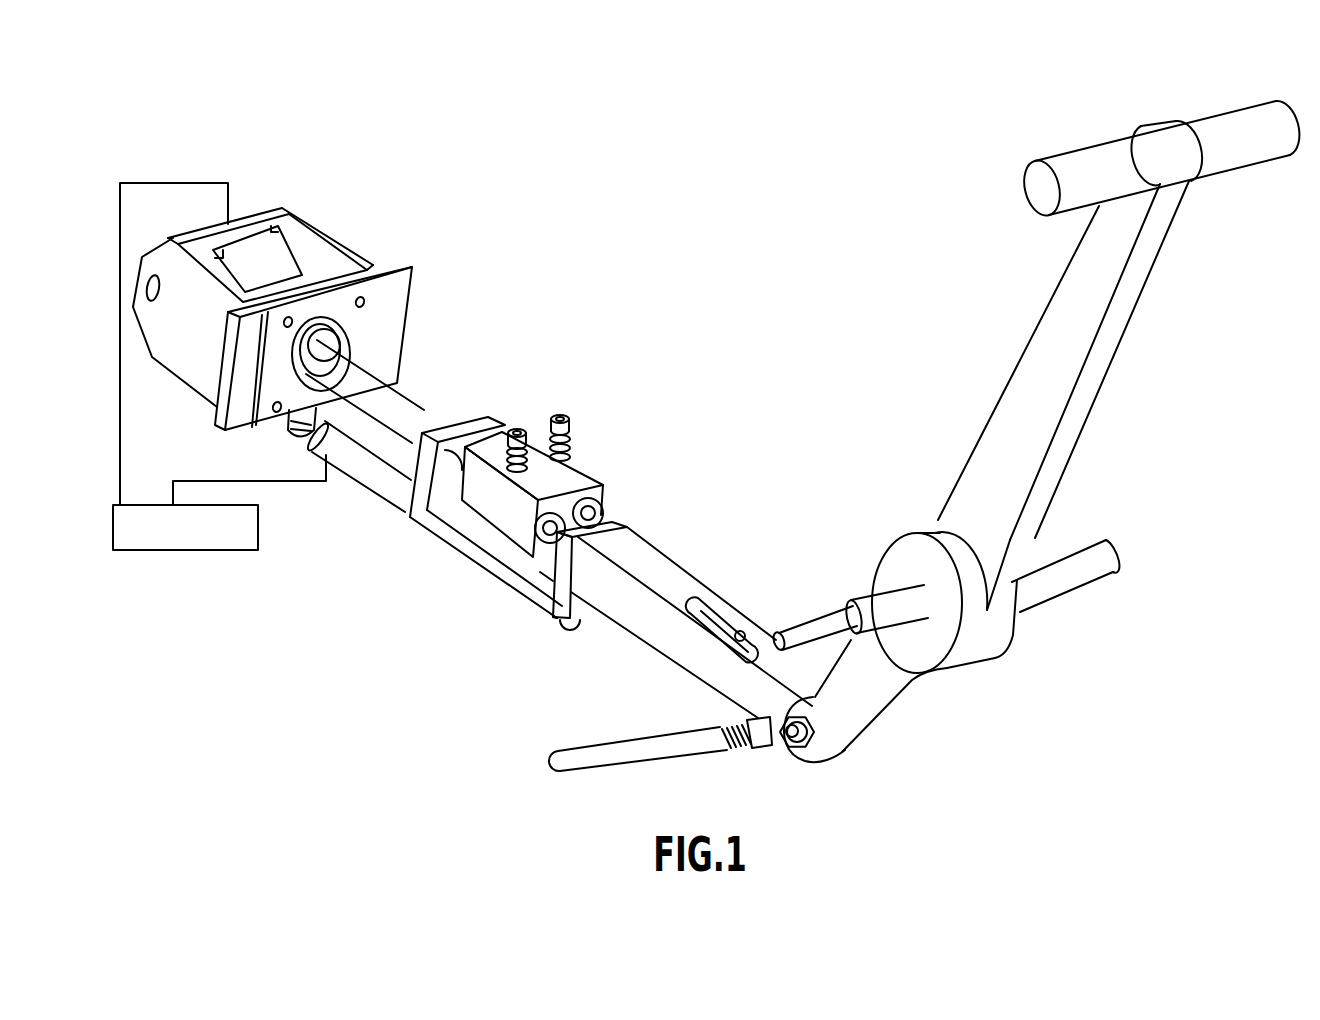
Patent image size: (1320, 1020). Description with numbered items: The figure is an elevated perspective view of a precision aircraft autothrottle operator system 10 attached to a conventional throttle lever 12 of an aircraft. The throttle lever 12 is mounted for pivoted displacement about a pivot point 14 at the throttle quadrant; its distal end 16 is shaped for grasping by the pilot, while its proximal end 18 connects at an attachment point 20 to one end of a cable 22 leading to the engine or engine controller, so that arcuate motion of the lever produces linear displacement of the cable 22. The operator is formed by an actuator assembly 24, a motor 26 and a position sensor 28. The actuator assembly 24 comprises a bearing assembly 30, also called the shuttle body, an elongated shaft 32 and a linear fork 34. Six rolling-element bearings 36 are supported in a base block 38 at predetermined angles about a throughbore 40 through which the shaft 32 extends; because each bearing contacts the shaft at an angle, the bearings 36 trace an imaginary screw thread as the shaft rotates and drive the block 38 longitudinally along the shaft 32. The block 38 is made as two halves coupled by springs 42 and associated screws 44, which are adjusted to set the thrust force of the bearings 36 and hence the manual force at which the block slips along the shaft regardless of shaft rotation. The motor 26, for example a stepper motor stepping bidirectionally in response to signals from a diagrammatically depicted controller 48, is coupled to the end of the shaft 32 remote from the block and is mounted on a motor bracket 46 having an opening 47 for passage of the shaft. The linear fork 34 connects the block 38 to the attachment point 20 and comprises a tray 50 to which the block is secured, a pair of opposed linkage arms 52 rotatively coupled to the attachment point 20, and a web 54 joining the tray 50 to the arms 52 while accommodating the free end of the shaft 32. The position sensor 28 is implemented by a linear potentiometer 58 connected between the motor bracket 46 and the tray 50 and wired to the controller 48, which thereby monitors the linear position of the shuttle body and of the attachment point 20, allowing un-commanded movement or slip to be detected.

The autothrottle operator system 10 is at (788, 184).
The throttle lever 12 is at (1232, 318).
The pivot point 14 is at (1148, 541).
The distal end 16 is at (1183, 98).
The proximal end 18 is at (900, 738).
The attachment point 20 is at (830, 784).
The cable 22 is at (655, 778).
The actuator assembly 24 is at (455, 655).
The motor 26 is at (255, 252).
The position sensor 28 is at (330, 560).
The bearing assembly 30 is at (640, 400).
The elongated shaft 32 is at (438, 375).
The linear fork 34 is at (758, 536).
The rolling-element bearings 36 is at (624, 487).
The base block 38 is at (447, 597).
The throughbore 40 is at (392, 540).
The springs 42 is at (535, 434).
The screws 44 is at (567, 417).
The motor bracket 46 is at (245, 455).
The opening 47 is at (388, 245).
The controller 48 is at (182, 583).
The tray 50 is at (500, 652).
The linkage arms 52 is at (648, 690).
The web 54 is at (662, 506).
The linear potentiometer 58 is at (330, 507).